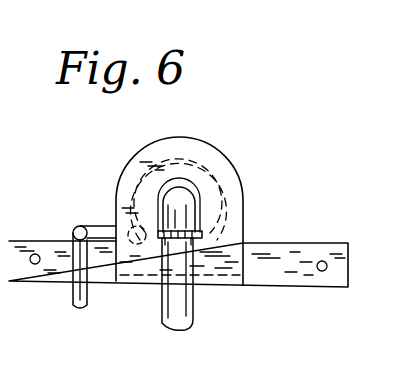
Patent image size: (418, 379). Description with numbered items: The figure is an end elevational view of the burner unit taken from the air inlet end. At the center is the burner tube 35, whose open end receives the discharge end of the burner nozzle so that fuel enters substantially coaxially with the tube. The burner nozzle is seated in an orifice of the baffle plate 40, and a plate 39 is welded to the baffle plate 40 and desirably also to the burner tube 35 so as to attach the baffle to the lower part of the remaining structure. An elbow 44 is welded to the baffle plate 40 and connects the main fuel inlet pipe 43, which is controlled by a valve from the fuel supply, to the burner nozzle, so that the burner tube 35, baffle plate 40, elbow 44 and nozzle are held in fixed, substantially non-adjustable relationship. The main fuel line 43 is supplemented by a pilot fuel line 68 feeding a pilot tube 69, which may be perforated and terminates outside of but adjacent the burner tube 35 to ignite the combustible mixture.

The burner tube 35 is at (207, 170).
The plate 39 is at (275, 281).
The baffle plate 40 is at (235, 190).
The fuel inlet pipe 43 is at (193, 312).
The elbow 44 is at (186, 213).
The pilot fuel line 68 is at (73, 290).
The pilot tube 69 is at (130, 227).